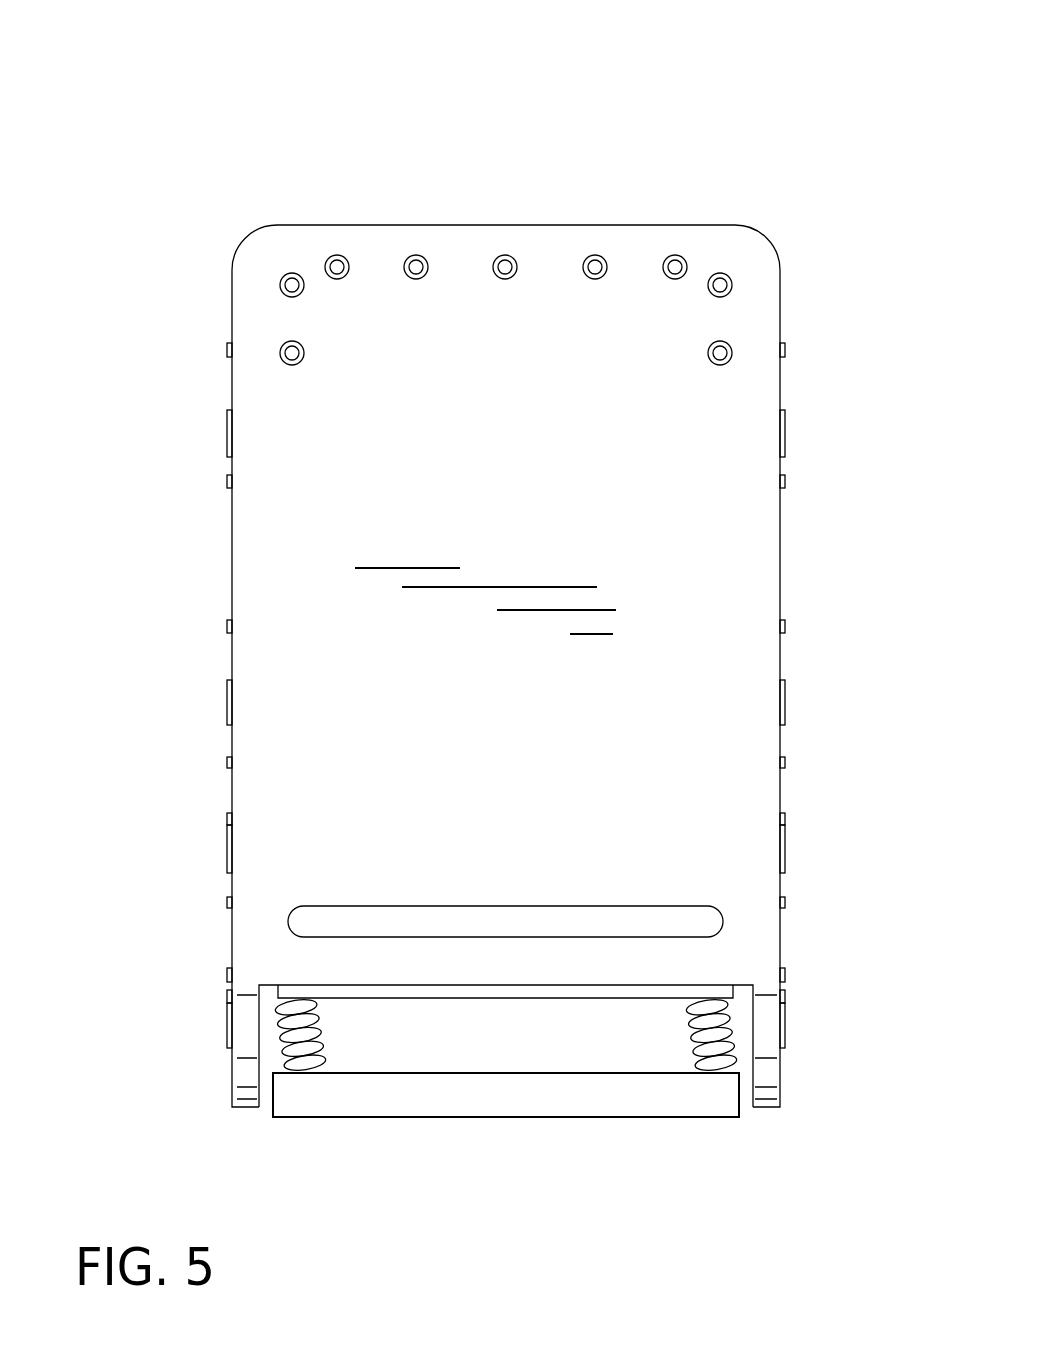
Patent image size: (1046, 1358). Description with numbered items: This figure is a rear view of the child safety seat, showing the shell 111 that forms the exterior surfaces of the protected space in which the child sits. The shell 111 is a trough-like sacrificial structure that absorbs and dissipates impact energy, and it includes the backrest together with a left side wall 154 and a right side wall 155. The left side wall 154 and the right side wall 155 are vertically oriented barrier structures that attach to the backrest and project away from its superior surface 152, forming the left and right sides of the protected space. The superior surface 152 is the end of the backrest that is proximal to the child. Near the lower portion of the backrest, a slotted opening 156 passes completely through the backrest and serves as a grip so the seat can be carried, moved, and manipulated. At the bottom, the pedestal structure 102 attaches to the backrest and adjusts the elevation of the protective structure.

The shell 111 is at (178, 142).
The superior surface 152 is at (705, 559).
The left side wall 154 is at (238, 316).
The right side wall 155 is at (772, 312).
The slotted opening 156 is at (668, 906).
The pedestal structure 102 is at (490, 1095).